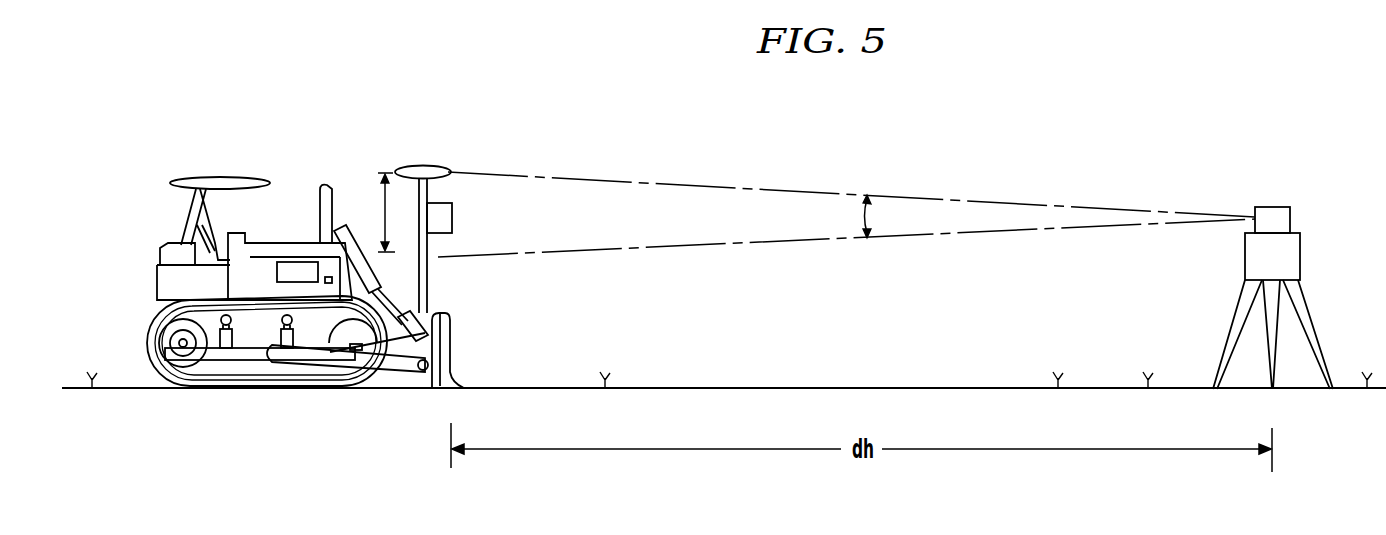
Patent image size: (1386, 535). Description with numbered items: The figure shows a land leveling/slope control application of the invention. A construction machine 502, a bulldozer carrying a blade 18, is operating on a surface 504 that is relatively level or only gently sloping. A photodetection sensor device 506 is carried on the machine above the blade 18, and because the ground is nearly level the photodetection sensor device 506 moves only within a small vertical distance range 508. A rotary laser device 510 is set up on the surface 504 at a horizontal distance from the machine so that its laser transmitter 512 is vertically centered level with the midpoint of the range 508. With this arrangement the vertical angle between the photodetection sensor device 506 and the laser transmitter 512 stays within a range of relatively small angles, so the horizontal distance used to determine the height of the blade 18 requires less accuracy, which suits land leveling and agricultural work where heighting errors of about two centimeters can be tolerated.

The construction machine 502 is at (300, 180).
The vertical distance range 508 is at (380, 212).
The photodetection sensor device 506 is at (452, 190).
The blade 18 is at (452, 349).
The surface 504 is at (706, 388).
The rotary laser device 510 is at (1302, 262).
The laser transmitter 512 is at (1292, 218).